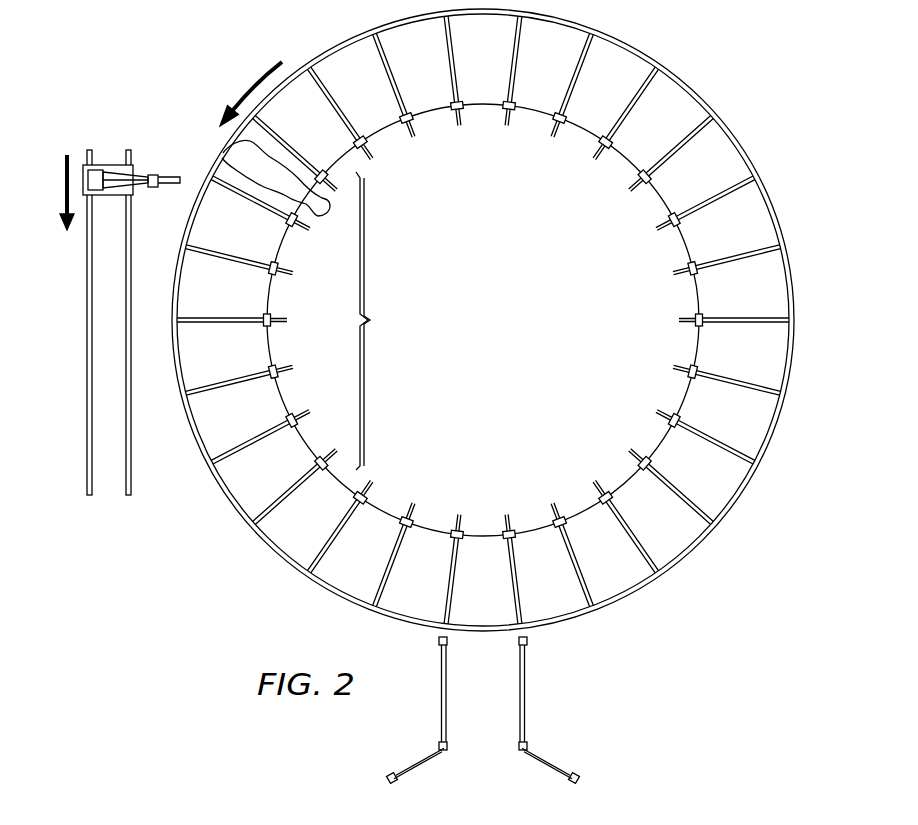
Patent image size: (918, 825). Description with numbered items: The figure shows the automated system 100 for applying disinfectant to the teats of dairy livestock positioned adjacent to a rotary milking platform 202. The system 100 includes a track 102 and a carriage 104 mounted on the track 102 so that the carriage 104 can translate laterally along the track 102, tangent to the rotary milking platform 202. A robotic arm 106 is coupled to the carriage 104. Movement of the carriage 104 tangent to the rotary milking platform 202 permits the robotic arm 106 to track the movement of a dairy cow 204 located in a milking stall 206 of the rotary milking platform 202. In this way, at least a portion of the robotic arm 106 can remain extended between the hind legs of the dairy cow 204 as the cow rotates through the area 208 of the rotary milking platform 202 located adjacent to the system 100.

The automated system 100 is at (130, 105).
The track 102 is at (79, 321).
The carriage 104 is at (108, 153).
The robotic arm 106 is at (142, 171).
The rotary milking platform 202 is at (223, 509).
The dairy cow 204 is at (328, 218).
The milking stall 206 is at (273, 145).
The area 208 is at (382, 321).